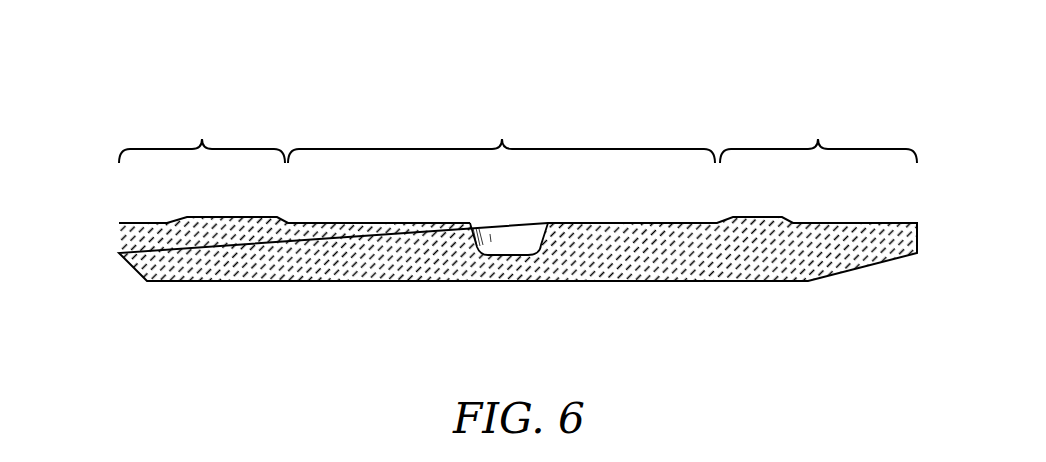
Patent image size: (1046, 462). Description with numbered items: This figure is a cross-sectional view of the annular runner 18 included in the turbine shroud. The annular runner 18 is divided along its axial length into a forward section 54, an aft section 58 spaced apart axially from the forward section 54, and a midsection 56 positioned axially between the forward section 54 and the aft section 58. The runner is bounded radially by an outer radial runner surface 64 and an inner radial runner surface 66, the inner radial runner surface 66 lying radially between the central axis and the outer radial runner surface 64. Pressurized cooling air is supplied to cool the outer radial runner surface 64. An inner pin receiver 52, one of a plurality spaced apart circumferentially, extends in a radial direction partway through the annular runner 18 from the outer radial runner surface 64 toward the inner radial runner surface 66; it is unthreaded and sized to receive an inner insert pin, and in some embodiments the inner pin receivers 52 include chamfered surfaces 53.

The annular runner 18 is at (127, 85).
The inner pin receivers 52 is at (512, 222).
The chamfered surfaces 53 is at (540, 252).
The forward section 54 is at (202, 135).
The midsection 56 is at (501, 135).
The aft section 58 is at (818, 135).
The outer radial runner surface 64 is at (360, 223).
The inner radial runner surface 66 is at (215, 282).